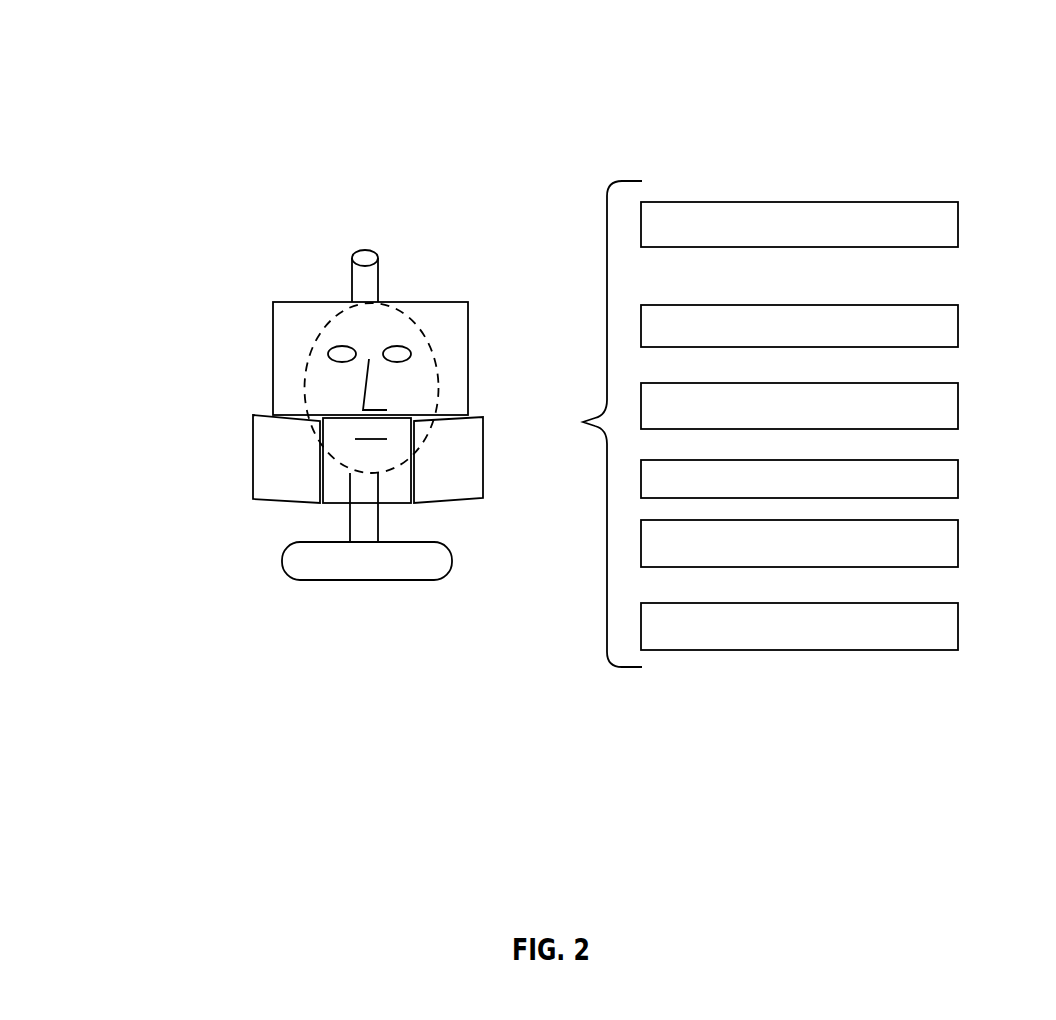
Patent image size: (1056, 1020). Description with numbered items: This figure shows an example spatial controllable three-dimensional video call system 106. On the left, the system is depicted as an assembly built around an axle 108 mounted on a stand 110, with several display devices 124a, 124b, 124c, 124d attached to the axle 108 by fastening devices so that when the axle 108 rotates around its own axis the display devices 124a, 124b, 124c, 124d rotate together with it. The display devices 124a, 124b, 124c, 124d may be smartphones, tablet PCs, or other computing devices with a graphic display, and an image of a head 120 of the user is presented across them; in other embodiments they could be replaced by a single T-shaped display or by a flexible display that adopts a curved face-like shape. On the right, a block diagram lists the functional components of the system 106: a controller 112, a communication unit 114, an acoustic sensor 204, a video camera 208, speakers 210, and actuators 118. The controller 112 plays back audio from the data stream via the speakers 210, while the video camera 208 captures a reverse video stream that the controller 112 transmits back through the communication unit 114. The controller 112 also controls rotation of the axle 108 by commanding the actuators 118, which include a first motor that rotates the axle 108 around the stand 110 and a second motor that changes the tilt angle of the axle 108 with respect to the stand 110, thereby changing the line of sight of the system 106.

The spatial controllable 3D video call system 106 is at (801, 354).
The axle 108 is at (367, 250).
The stand 110 is at (290, 567).
The controller 112 is at (863, 238).
The communication unit 114 is at (913, 338).
The actuators 118 is at (860, 642).
The head 120 is at (313, 336).
The display device 124a is at (455, 327).
The display device 124b is at (267, 445).
The display device 124c is at (342, 488).
The display device 124d is at (462, 488).
The acoustic sensor 204 is at (893, 418).
The video camera 208 is at (882, 492).
The speakers 210 is at (860, 556).